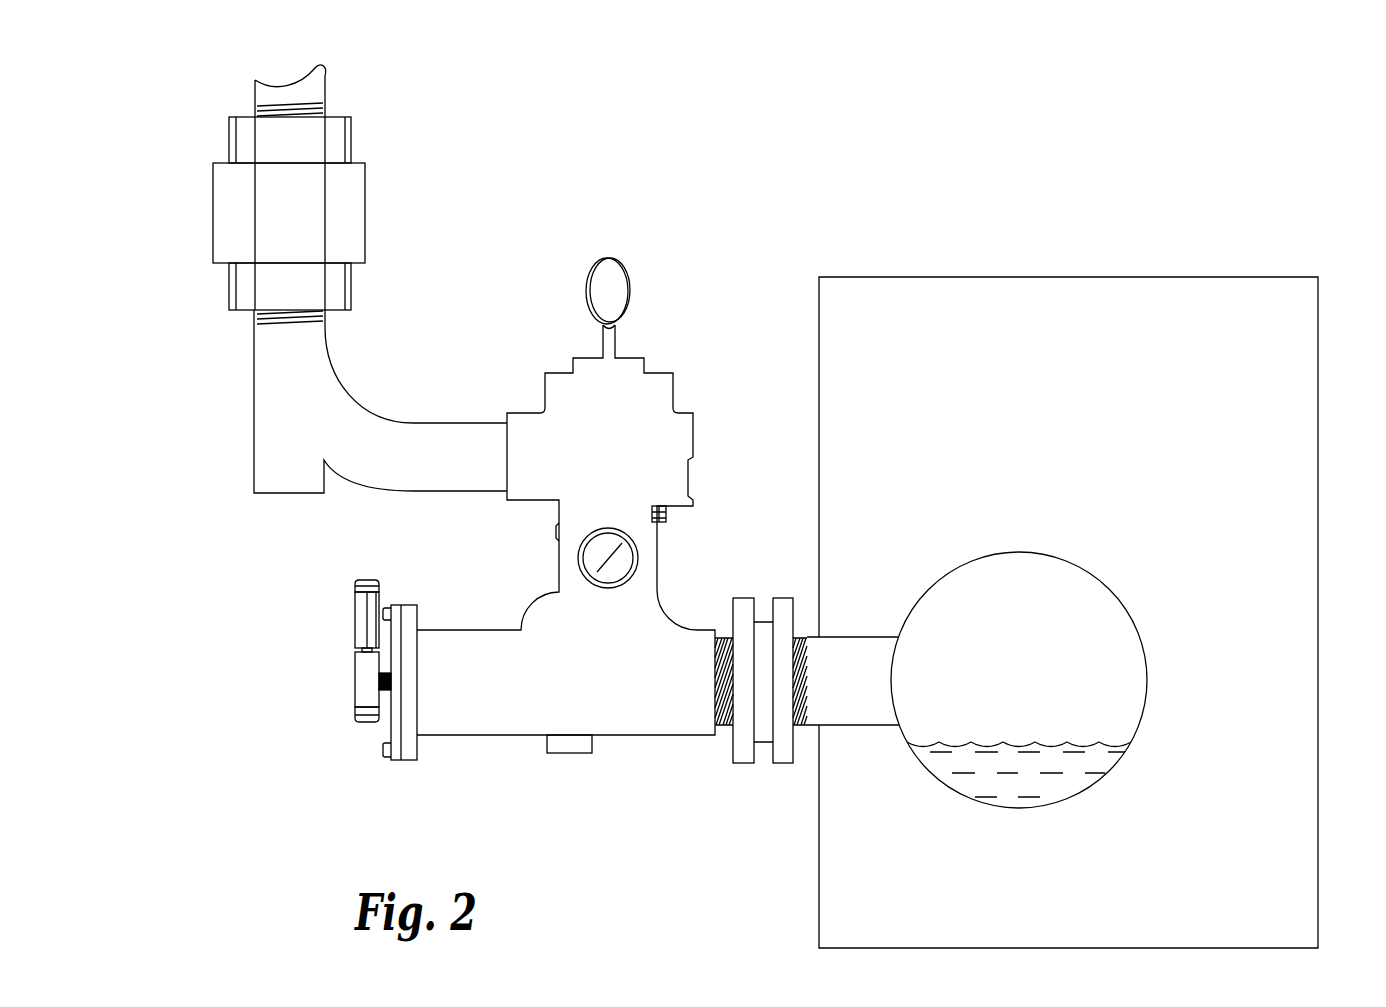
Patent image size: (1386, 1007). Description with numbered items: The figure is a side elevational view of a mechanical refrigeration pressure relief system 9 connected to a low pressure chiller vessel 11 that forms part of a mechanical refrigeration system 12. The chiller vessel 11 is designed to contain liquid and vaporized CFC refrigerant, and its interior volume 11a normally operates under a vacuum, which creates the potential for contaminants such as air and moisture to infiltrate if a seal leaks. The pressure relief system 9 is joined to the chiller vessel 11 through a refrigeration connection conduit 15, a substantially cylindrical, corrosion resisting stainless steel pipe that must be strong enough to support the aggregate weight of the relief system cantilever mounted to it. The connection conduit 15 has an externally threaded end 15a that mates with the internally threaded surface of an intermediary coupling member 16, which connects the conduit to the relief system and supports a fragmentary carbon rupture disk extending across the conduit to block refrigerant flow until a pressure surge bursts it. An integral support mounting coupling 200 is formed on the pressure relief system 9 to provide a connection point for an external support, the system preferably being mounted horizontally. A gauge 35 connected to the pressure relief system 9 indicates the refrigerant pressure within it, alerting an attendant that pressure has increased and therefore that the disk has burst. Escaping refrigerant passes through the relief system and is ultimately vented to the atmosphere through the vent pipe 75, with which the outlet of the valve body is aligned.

The mechanical refrigeration pressure relief system 9 is at (666, 793).
The low pressure chiller vessel 11 is at (900, 732).
The interior volume 11a is at (1117, 635).
The mechanical refrigeration system 12 is at (1283, 378).
The refrigeration connection conduit 15 is at (805, 636).
The externally threaded end 15a is at (803, 733).
The intermediary coupling member 16 is at (740, 598).
The gauge 35 is at (636, 535).
The vent pipe 75 is at (335, 368).
The integral support mounting coupling 200 is at (562, 753).